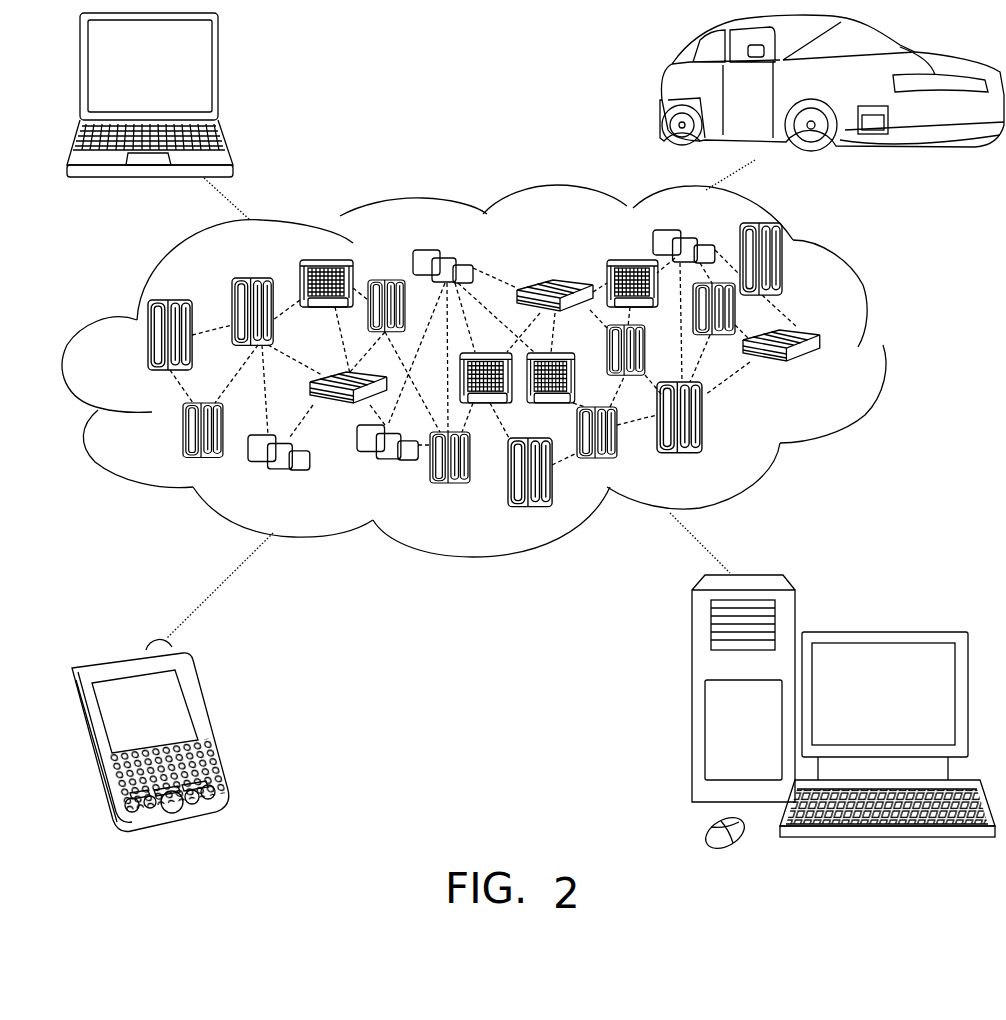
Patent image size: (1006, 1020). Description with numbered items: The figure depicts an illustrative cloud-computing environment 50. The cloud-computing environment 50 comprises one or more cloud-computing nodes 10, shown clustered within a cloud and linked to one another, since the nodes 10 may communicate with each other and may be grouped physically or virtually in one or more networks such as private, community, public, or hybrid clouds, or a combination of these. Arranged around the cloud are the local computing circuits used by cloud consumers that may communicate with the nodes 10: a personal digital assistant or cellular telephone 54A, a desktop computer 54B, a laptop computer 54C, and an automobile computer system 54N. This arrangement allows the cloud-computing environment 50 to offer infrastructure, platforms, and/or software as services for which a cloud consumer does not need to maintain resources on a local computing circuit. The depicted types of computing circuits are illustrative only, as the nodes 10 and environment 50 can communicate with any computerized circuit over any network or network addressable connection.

The cloud-computing node 10 is at (836, 378).
The cloud-computing environment 50 is at (885, 347).
The personal digital assistant or cellular telephone 54A is at (207, 727).
The desktop computer 54B is at (882, 631).
The laptop computer 54C is at (220, 74).
The automobile computer system 54N is at (660, 97).